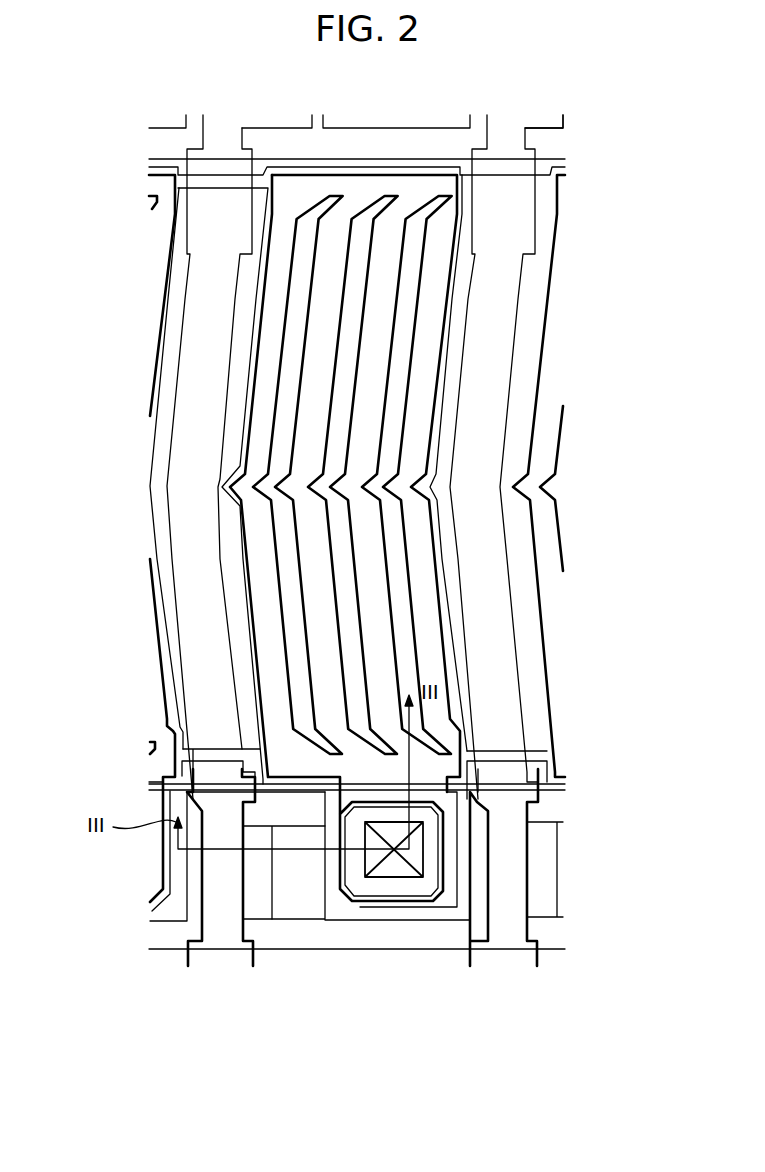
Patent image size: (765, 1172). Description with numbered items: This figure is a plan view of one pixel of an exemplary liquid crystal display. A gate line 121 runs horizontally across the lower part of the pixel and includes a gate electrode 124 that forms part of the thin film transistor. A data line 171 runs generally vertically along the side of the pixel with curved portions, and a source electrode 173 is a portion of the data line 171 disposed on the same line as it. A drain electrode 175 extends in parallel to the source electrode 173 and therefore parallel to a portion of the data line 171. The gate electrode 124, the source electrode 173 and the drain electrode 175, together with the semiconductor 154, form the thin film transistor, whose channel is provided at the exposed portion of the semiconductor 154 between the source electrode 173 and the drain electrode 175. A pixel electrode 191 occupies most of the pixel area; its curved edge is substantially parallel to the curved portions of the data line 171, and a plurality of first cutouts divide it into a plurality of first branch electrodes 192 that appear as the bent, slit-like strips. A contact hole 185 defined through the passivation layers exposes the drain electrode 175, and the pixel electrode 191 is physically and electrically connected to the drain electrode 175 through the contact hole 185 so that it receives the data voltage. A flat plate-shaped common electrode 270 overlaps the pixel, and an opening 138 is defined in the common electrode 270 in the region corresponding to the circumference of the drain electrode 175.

The gate line 121 is at (462, 950).
The gate electrode 124 is at (188, 872).
The opening 138 is at (405, 907).
The semiconductor layer 154 is at (256, 950).
The data line 171 is at (170, 527).
The source electrode 173 is at (243, 885).
The drain electrode 175 is at (317, 878).
The contact hole 185 is at (380, 887).
The pixel electrode 191 is at (448, 718).
The first branch electrodes 192 is at (358, 625).
The common electrode 270 is at (447, 372).